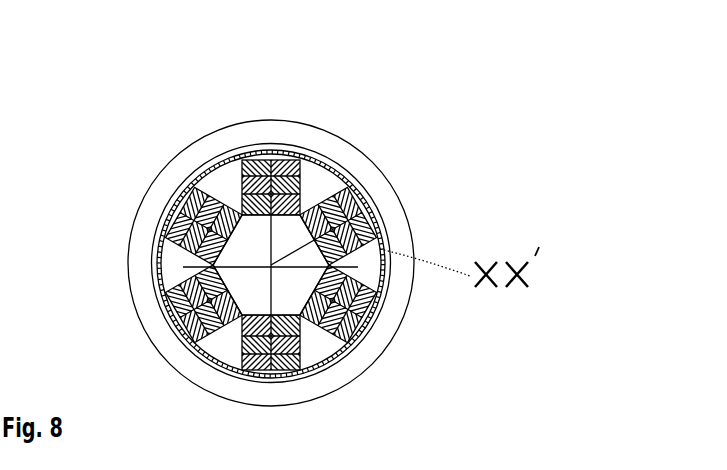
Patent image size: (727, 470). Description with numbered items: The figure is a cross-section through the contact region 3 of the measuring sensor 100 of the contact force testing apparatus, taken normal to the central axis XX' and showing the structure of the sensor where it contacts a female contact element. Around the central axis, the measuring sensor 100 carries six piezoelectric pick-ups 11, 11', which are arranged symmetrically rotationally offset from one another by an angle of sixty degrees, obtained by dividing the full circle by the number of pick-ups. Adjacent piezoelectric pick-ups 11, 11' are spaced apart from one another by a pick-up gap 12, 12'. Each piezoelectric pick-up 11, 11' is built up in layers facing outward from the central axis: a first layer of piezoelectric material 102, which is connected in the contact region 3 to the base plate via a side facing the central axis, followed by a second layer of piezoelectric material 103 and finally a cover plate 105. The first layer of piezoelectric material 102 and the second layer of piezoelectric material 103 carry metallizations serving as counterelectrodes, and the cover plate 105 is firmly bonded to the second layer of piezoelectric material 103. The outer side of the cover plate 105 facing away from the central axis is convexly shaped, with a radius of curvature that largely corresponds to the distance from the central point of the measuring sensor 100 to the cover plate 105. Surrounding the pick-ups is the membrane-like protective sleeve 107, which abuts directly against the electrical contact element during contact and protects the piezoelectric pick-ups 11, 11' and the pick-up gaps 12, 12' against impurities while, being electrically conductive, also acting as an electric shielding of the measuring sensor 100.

The measuring sensor 100 is at (449, 207).
The contact region 3 is at (362, 224).
The piezoelectric pick-up 11 is at (253, 236).
The piezoelectric pick-up 11' is at (271, 202).
The pick-up gap 12 is at (270, 249).
The pick-up gap 12' is at (340, 179).
The first layer of piezoelectric material 102 is at (183, 267).
The second layer of piezoelectric material 103 is at (166, 228).
The cover plate 105 is at (166, 204).
The protective sleeve 107 is at (292, 148).